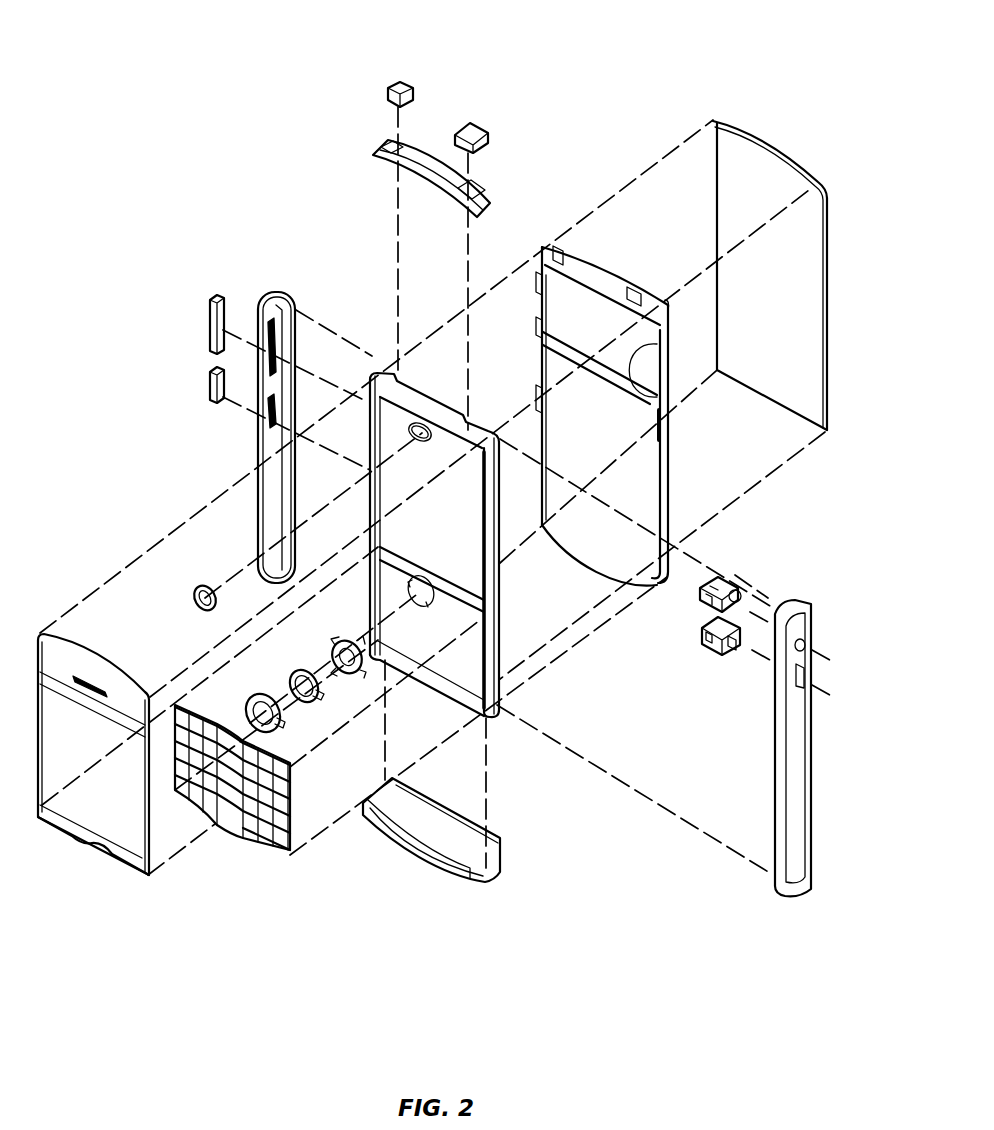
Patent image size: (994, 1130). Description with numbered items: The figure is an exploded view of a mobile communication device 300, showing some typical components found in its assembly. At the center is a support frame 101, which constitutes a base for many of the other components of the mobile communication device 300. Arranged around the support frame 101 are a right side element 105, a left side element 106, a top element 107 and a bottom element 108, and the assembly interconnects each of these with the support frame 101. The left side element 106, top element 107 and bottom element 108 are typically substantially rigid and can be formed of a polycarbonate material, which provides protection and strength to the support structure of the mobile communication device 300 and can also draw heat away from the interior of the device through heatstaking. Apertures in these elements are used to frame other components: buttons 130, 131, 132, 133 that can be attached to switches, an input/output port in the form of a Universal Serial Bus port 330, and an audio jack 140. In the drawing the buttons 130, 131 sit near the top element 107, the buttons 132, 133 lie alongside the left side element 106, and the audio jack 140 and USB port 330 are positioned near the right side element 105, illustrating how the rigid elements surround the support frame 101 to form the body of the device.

The mobile communication device 300 is at (226, 60).
The support frame 101 is at (442, 388).
The right side element 105 is at (774, 738).
The left side element 106 is at (285, 294).
The top element 107 is at (383, 138).
The bottom element 108 is at (406, 858).
The button 130 is at (390, 78).
The button 131 is at (482, 124).
The button 132 is at (210, 296).
The button 133 is at (210, 367).
The audio jack 140 is at (698, 598).
The Universal Serial Bus (USB) port 330 is at (700, 636).